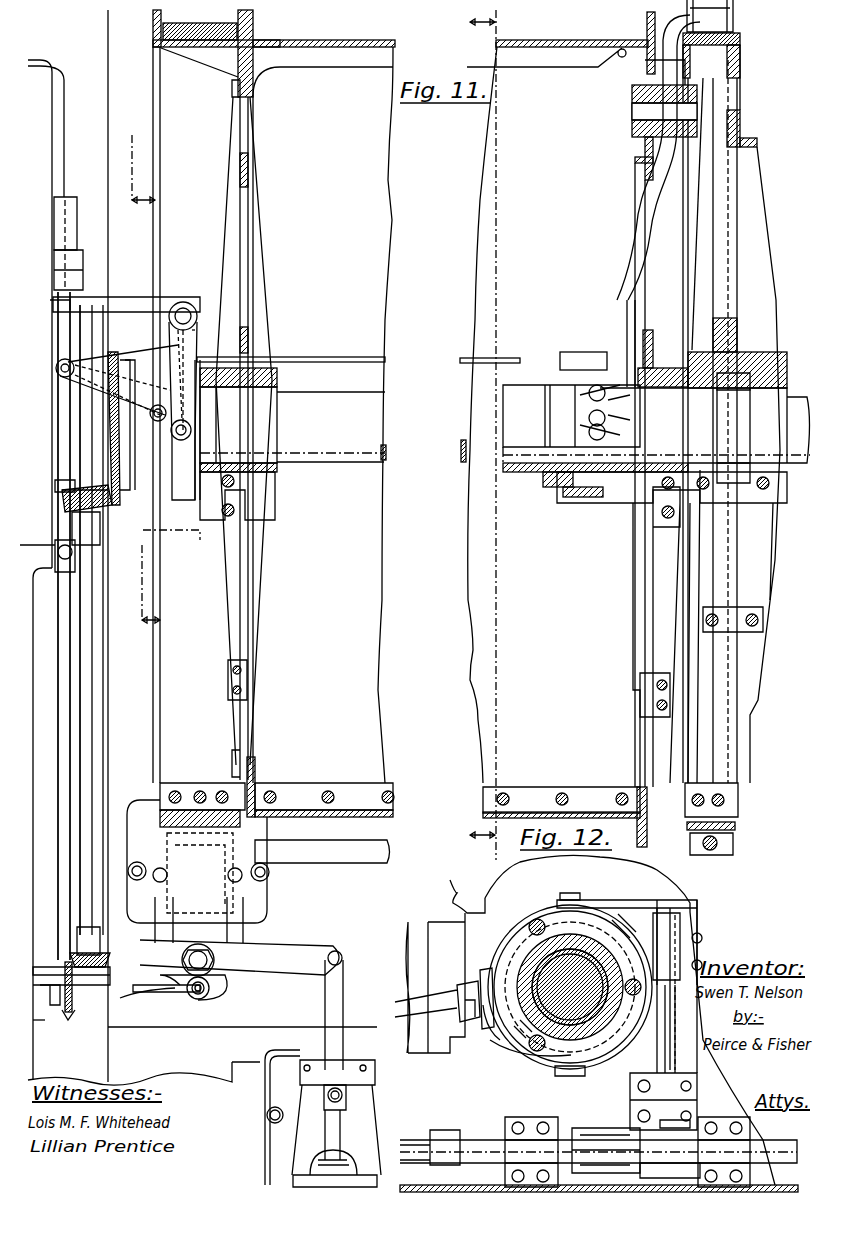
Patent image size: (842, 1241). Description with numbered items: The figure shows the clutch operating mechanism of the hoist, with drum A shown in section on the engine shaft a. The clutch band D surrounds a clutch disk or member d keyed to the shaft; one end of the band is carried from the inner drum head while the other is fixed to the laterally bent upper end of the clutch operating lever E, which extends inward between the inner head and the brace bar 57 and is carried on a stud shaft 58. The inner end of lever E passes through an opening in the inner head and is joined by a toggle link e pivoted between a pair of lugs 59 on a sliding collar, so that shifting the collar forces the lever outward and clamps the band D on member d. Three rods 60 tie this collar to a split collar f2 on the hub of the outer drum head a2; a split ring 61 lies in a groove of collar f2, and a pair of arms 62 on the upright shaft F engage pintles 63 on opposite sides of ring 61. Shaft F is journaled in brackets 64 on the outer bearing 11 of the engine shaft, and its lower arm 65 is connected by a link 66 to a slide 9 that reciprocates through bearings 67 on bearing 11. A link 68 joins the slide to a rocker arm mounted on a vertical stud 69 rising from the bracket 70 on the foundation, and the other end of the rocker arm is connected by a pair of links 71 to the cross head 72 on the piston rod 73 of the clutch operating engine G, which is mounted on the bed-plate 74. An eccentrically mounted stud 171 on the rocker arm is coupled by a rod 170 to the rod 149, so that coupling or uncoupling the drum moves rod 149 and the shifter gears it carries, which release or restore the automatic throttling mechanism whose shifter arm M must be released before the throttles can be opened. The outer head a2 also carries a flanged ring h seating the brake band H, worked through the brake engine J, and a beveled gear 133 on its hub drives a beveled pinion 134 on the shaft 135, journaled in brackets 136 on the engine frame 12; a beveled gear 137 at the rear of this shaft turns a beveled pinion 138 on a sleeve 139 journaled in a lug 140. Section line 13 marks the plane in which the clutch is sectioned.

In FIG. 11, the slide 9 is at (72, 195).
In FIG. 12, the slide 9 is at (478, 1148).
In FIG. 11, the outer bearing 11 is at (30, 330).
In FIG. 12, the outer bearing 11 is at (672, 890).
In FIG. 11, the engine frame 12 is at (142, 388).
In FIG. 11, the section line 13— 13 is at (496, 430).
In FIG. 11, the brace bar 57 is at (725, 88).
In FIG. 11, the stud shaft 58 is at (635, 108).
In FIG. 11, the lugs 59 is at (588, 420).
In FIG. 11, the rods 60 is at (318, 362).
In FIG. 12, the rods 60 is at (537, 920).
In FIG. 11, the split ring 61 is at (198, 450).
In FIG. 11, the arms 62 is at (200, 345).
In FIG. 12, the arms 62 is at (625, 905).
In FIG. 11, the pintles 63 is at (195, 428).
In FIG. 12, the pintles 63 is at (580, 895).
In FIG. 11, the brackets 64 is at (93, 300).
In FIG. 12, the brackets 64 is at (700, 940).
In FIG. 11, the arm 65 is at (155, 360).
In FIG. 12, the arm 65 is at (665, 1168).
In FIG. 11, the link 66 is at (85, 360).
In FIG. 12, the link 66 is at (598, 1128).
In FIG. 11, the bearings 67 is at (80, 252).
In FIG. 12, the bearings 67 is at (525, 1118).
In FIG. 11, the link 68 is at (65, 778).
In FIG. 12, the link 68 is at (432, 1140).
In FIG. 11, the vertical stud 69 is at (182, 960).
In FIG. 11, the bracket 70 is at (265, 900).
In FIG. 11, the links 71 is at (322, 998).
In FIG. 11, the cross head 72 is at (346, 1098).
In FIG. 11, the piston rod 73 is at (330, 1133).
In FIG. 11, the bed-plate 74 is at (264, 1073).
In FIG. 11, the beveled gear 133 is at (120, 478).
In FIG. 12, the beveled gear 133 is at (525, 945).
In FIG. 11, the beveled pinion 134 is at (112, 520).
In FIG. 12, the beveled pinion 134 is at (487, 975).
In FIG. 11, the shaft 135 is at (88, 657).
In FIG. 11, the brackets 136 is at (100, 548).
In FIG. 12, the brackets 136 is at (462, 992).
In FIG. 11, the beveled gear 137 is at (112, 960).
In FIG. 11, the beveled pinion 138 is at (75, 1005).
In FIG. 11, the sleeve 139 is at (59, 1015).
In FIG. 11, the lug 140 is at (42, 1025).
In FIG. 11, the rods 149 is at (165, 990).
In FIG. 11, the rod 170 is at (170, 1000).
In FIG. 11, the stud 171 is at (208, 996).
In FIG. 11, the drum A is at (325, 40).
In FIG. 11, the clutch band D is at (740, 36).
In FIG. 11, the clutch operating lever E is at (640, 226).
In FIG. 11, the clutch operating shaft F is at (183, 302).
In FIG. 12, the clutch operating shaft F is at (668, 1031).
In FIG. 11, the clutch operating engine G is at (300, 1178).
In FIG. 11, the brake band H is at (195, 30).
In FIG. 11, the brake engine J is at (312, 855).
In FIG. 11, the shifter arm M is at (118, 990).
In FIG. 11, the engine shaft a is at (322, 445).
In FIG. 12, the engine shaft a is at (560, 940).
In FIG. 11, the outer drum head a2 is at (256, 300).
In FIG. 11, the clutch disk d is at (742, 118).
In FIG. 11, the toggle link e is at (619, 418).
In FIG. 11, the split collar f2 is at (195, 500).
In FIG. 11, the flanged ring h is at (198, 60).